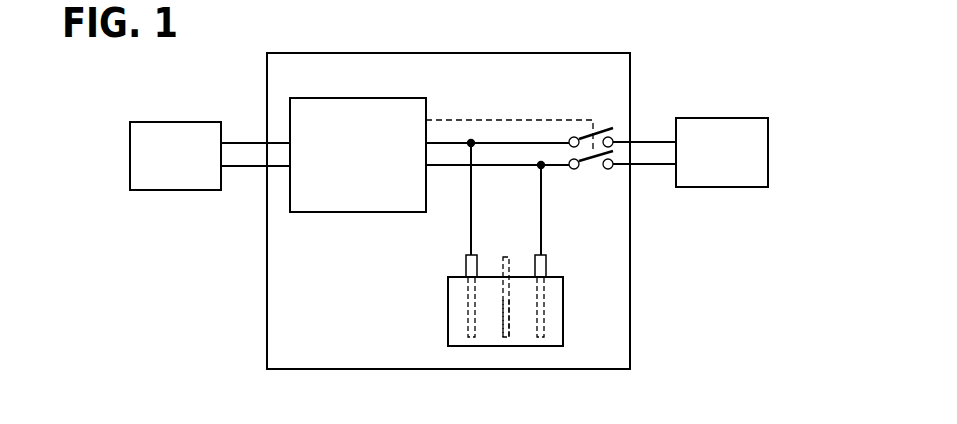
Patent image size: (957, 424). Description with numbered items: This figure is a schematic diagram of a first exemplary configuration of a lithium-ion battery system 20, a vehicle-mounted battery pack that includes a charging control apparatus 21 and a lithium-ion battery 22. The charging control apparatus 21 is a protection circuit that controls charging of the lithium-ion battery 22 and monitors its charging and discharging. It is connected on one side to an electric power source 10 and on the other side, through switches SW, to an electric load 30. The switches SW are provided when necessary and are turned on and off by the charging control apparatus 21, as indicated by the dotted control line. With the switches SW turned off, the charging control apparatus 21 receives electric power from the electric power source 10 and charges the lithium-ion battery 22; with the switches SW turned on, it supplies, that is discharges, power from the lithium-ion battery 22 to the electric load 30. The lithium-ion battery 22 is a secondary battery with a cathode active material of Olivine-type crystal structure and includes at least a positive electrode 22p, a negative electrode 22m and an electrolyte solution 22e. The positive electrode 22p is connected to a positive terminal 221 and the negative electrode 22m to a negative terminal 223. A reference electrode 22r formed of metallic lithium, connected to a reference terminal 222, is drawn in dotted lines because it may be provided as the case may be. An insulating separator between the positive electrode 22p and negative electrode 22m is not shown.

The electric power source 10 is at (151, 121).
The lithium-ion battery system 20 is at (336, 52).
The charging control apparatus 21 is at (336, 97).
The lithium-ion battery 22 is at (447, 292).
The positive terminal 221 is at (468, 262).
The reference terminal 222 is at (505, 254).
The negative terminal 223 is at (543, 262).
The electrolyte solution 22e is at (557, 305).
The positive electrode 22p is at (471, 347).
The reference electrode 22r is at (505, 347).
The negative electrode 22m is at (541, 347).
The electric load 30 is at (699, 117).
The switches SW is at (591, 168).